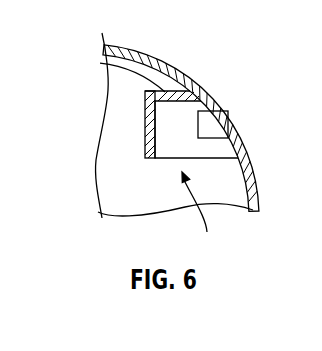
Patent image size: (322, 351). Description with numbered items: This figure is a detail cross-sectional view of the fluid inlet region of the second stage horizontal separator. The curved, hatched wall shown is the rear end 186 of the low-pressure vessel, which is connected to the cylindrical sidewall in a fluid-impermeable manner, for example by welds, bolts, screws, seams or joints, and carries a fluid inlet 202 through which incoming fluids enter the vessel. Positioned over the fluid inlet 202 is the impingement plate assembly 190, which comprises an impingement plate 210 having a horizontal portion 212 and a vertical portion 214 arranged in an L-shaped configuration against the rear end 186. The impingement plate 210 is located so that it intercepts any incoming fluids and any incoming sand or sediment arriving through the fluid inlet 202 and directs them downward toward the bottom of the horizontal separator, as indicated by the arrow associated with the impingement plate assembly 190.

The rear end 186 is at (148, 54).
The horizontal portion 212 is at (108, 60).
The impingement plate 210 is at (168, 90).
The vertical portion 214 is at (145, 122).
The fluid inlet 202 is at (203, 112).
The impingement plate assembly 190 is at (206, 215).